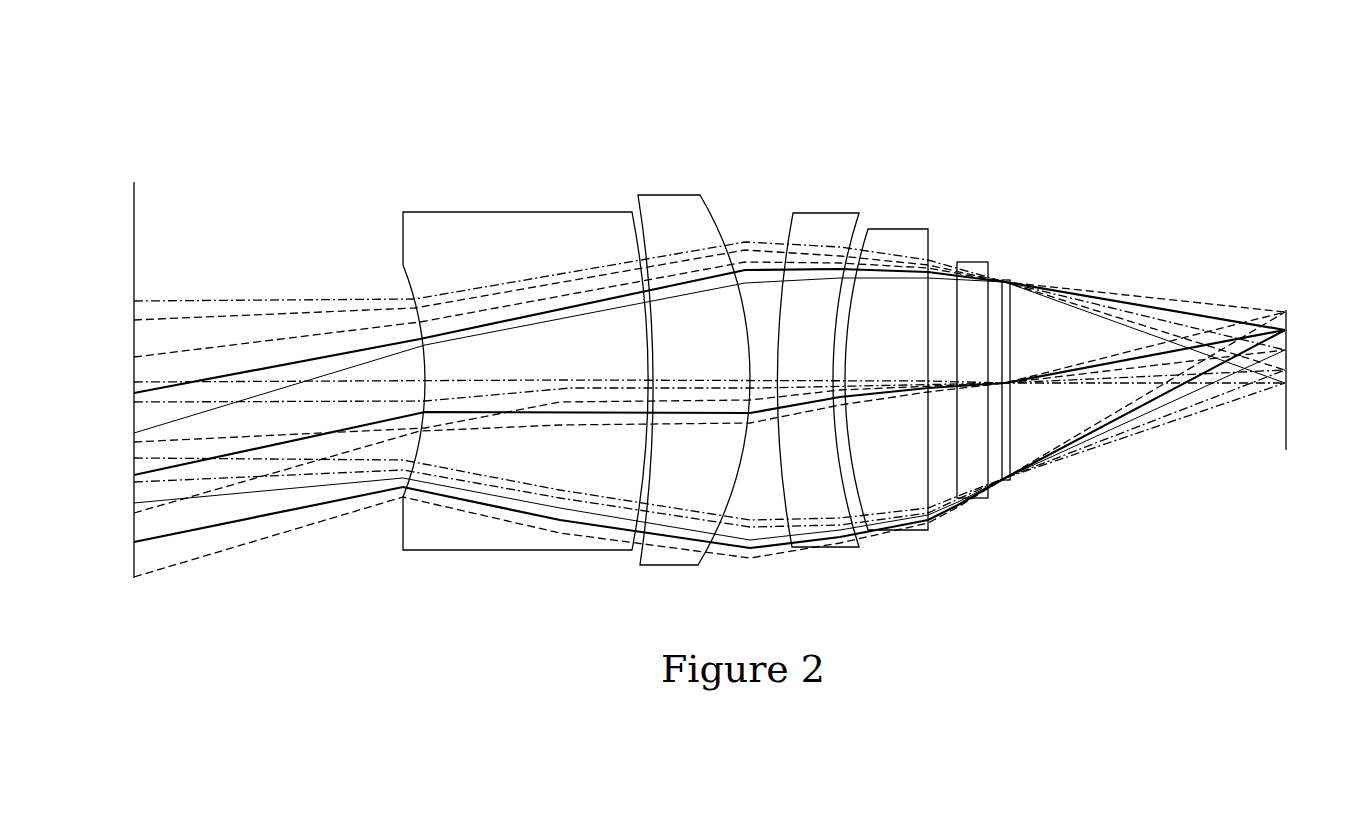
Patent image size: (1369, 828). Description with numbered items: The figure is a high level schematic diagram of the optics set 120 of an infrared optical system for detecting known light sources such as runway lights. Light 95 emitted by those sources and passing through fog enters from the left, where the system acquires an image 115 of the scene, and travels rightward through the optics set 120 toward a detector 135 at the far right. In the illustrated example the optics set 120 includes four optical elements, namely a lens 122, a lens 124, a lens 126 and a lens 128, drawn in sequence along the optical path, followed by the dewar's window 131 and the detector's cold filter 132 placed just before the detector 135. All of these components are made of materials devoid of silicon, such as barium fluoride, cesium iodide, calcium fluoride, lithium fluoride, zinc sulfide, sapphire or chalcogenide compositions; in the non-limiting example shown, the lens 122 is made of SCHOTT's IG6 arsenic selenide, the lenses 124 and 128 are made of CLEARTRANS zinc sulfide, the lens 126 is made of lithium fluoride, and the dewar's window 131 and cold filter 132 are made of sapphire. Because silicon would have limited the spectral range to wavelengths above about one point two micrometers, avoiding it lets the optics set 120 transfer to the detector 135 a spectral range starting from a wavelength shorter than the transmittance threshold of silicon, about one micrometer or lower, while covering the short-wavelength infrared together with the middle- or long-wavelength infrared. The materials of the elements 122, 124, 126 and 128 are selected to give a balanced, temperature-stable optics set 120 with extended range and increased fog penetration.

The light 95 is at (255, 198).
The image 115 is at (122, 426).
The optics set 120 is at (716, 59).
The lens 122 is at (490, 232).
The lens 124 is at (670, 218).
The lens 126 is at (823, 233).
The lens 128 is at (903, 238).
The dewar's window 131 is at (972, 263).
The cold filter 132 is at (1005, 279).
The detector 135 is at (1297, 331).